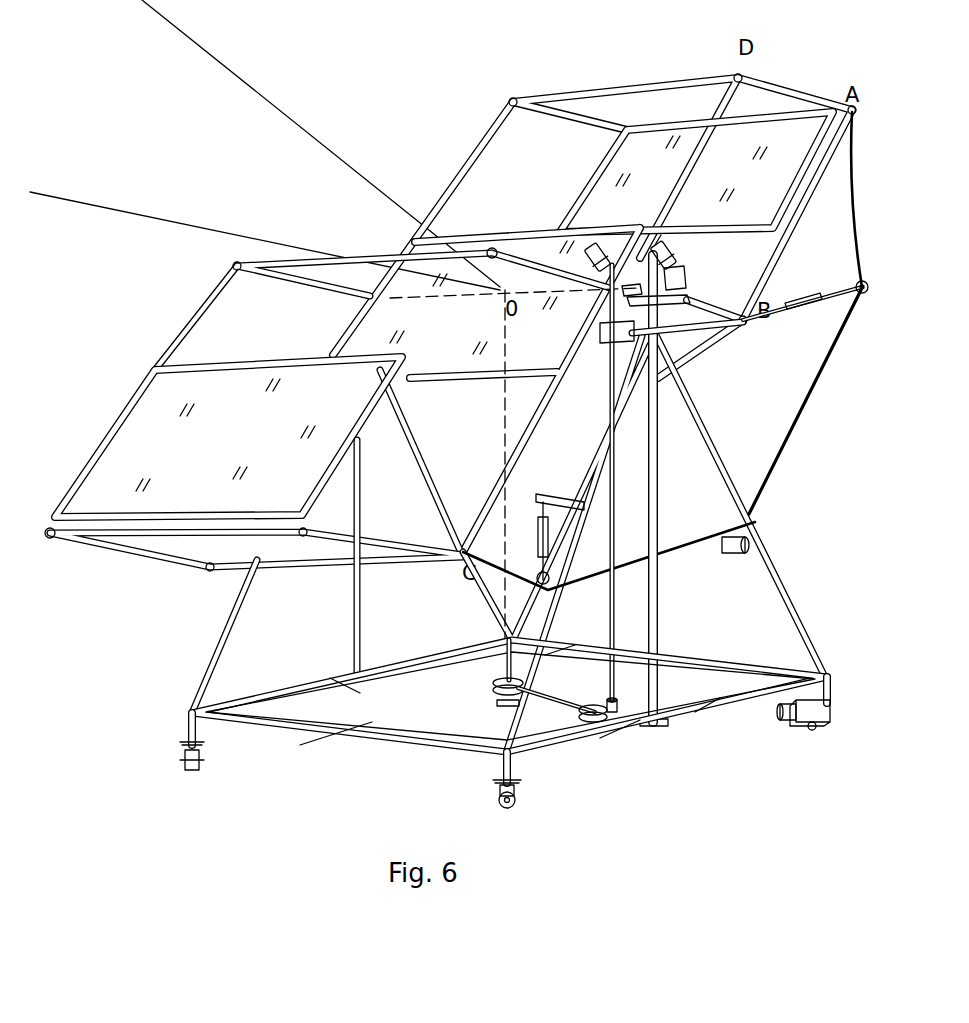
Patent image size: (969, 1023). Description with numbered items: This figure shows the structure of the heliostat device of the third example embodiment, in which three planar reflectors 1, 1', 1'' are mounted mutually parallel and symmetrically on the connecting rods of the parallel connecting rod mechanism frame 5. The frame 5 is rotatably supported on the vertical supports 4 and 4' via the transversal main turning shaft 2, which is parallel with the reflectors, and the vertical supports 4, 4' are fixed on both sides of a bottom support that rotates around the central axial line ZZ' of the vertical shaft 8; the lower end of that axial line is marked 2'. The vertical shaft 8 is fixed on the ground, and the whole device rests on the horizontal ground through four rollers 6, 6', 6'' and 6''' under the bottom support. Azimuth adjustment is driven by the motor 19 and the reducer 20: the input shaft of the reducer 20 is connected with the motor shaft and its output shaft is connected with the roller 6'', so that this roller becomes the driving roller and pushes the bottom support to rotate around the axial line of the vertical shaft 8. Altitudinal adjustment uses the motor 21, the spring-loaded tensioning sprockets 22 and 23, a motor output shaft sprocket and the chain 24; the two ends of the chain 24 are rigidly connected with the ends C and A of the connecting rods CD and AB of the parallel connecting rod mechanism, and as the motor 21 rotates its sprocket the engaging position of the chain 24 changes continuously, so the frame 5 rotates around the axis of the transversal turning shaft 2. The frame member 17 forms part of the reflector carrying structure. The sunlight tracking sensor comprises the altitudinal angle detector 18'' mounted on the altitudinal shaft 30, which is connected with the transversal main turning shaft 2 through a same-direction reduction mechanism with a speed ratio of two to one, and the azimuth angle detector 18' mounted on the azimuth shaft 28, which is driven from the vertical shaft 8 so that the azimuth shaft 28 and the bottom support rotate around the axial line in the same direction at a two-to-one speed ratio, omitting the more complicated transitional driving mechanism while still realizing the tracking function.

The planar reflector 1 is at (223, 437).
The planar reflector 1' is at (515, 390).
The planar reflector 1'' is at (706, 172).
The transversal main turning shaft 2 is at (515, 457).
The axial line end point 2' is at (523, 645).
The vertical support 4 is at (379, 557).
The vertical support 4' is at (674, 490).
The parallel connecting rod mechanism frame 5 is at (668, 88).
The roller 6 is at (186, 750).
The roller 6' is at (520, 785).
The driving roller 6'' is at (827, 711).
The roller 6''' is at (536, 677).
The vertical shaft 8 is at (497, 682).
The panel frame 17 is at (620, 220).
The azimuth angle detector 18' is at (595, 237).
The altitudinal angle detector 18'' is at (682, 241).
The motor 19 is at (786, 722).
The reducer 20 is at (810, 728).
The motor 21 is at (732, 555).
The tensioning sprocket 22 is at (540, 574).
The tensioning sprocket 23 is at (857, 285).
The chain 24 is at (826, 368).
The azimuth shaft 28 is at (612, 492).
The altitudinal shaft 30 is at (684, 270).